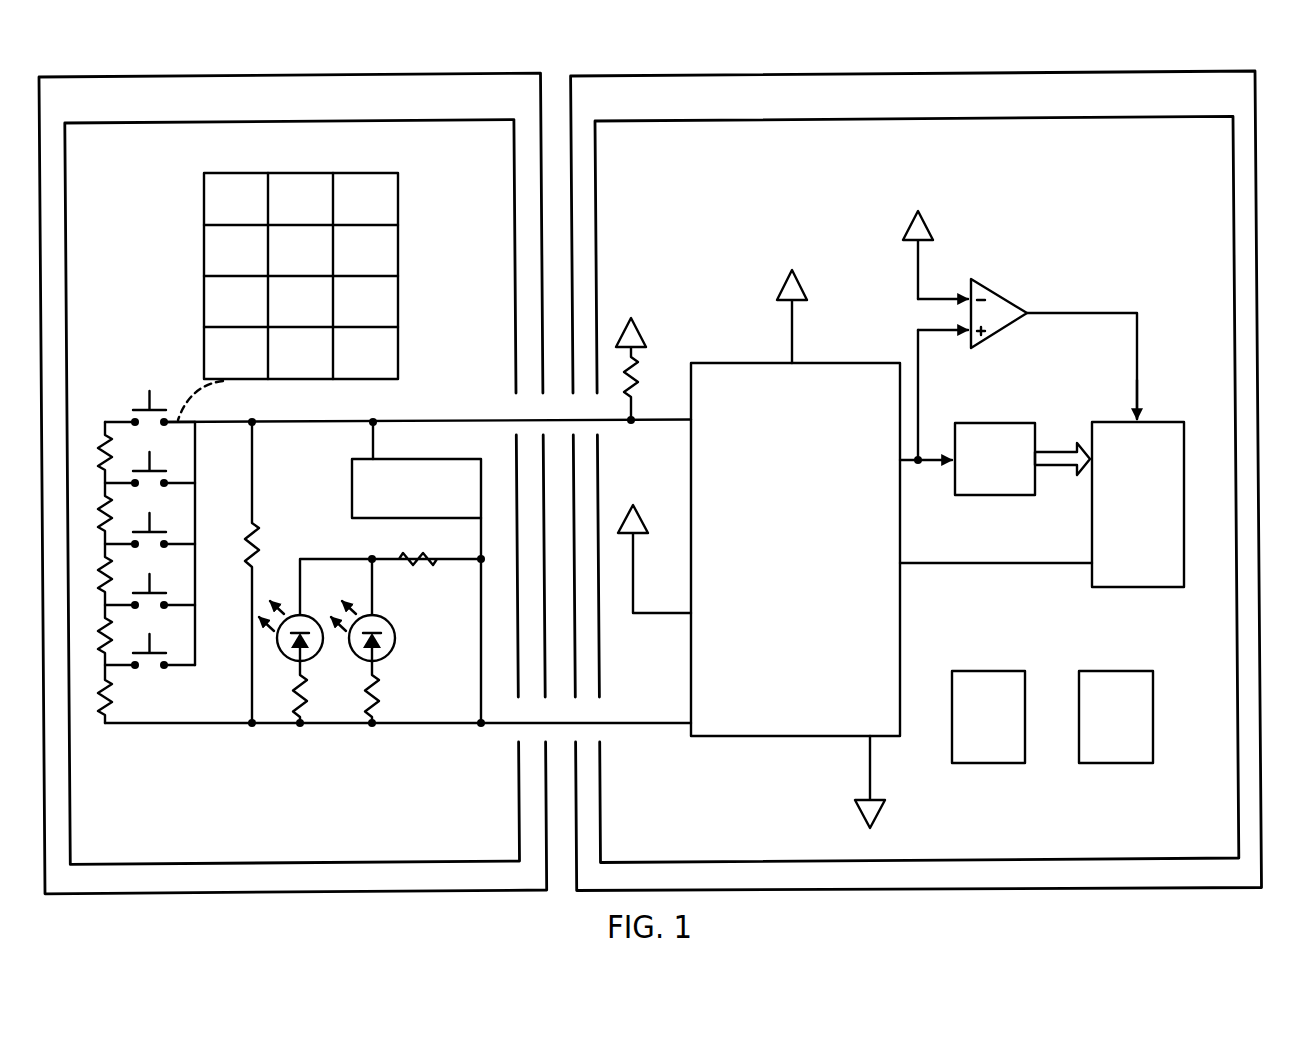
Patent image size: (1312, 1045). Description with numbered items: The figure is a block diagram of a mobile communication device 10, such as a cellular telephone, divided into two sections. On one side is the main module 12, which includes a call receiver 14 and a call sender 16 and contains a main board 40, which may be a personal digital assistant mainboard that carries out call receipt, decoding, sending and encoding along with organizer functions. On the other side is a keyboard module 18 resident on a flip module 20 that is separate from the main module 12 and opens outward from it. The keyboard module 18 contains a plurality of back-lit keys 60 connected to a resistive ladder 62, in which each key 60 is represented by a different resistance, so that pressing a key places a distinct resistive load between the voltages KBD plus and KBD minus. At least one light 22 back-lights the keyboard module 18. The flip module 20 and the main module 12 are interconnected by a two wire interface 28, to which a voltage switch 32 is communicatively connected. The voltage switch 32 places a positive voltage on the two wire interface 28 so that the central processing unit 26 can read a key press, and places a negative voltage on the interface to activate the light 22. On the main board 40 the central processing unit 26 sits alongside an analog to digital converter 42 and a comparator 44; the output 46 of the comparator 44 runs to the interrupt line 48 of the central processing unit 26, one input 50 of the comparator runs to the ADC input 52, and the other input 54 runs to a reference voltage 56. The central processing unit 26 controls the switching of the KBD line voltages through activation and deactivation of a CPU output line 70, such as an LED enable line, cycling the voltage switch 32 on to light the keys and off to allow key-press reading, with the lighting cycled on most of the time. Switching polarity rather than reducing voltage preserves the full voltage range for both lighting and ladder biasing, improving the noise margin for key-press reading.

The mobile communication device 10 is at (1294, 70).
The main module 12 is at (741, 75).
The call receiver 14 is at (982, 670).
The call sender 16 is at (1112, 670).
The keyboard module 18 is at (250, 121).
The flip module 20 is at (145, 76).
The light 22 is at (316, 662).
The central processing unit 26 is at (1092, 504).
The two wire interface 28 is at (437, 419).
The voltage switch 32 is at (352, 492).
The main board 40 is at (845, 120).
The analog to digital converter 42 is at (987, 422).
The comparator 44 is at (993, 287).
The output 46 is at (1029, 316).
The interrupt line 48 is at (1141, 417).
The input 50 is at (916, 342).
The ADC input 52 is at (952, 465).
The input 54 is at (916, 273).
The reference voltage 56 is at (929, 226).
The back-lit keys 60 is at (398, 247).
The resistive ladder 62 is at (196, 505).
The CPU output line 70 is at (1029, 565).